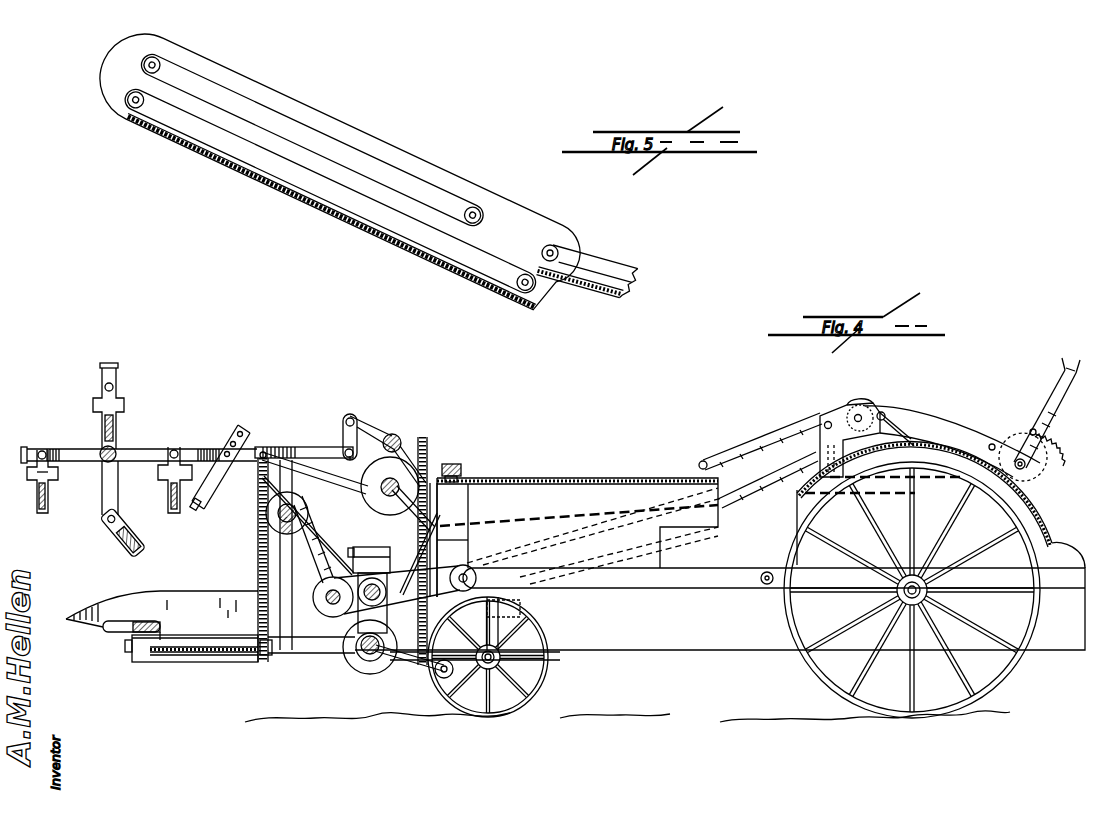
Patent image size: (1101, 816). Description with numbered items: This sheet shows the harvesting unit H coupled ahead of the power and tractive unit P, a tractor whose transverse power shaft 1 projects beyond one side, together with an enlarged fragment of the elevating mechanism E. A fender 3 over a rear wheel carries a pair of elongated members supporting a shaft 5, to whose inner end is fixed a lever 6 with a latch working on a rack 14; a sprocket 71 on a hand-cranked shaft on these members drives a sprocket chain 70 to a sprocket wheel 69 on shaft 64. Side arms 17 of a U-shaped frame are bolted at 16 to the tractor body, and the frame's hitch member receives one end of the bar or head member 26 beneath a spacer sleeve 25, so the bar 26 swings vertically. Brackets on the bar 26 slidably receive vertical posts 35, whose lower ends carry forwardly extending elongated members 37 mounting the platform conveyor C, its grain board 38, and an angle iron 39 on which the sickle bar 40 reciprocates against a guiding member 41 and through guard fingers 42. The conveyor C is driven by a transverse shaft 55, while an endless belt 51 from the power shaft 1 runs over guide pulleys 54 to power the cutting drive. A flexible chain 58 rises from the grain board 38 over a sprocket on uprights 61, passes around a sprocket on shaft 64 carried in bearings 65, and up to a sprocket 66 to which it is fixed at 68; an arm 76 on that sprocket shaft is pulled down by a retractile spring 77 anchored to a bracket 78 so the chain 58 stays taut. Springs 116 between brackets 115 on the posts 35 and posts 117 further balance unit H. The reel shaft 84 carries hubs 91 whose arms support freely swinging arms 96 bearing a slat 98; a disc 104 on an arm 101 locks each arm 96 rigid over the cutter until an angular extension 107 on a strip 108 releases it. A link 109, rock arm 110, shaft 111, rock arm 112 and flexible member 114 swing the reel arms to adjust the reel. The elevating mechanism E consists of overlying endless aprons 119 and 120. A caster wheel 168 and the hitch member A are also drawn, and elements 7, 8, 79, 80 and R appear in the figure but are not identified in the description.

In FIG. 4, the power shaft 1 is at (767, 586).
In FIG. 4, the fender 3 is at (1047, 532).
In FIG. 4, the shaft 5 is at (1047, 480).
In FIG. 4, the lever 6 is at (1058, 424).
In FIG. 4, the lever handle fork 7 is at (1066, 392).
In FIG. 4, the sector gear 8 is at (1050, 463).
In FIG. 4, the rack 14 is at (322, 560).
In FIG. 4, the bolt 16 is at (540, 622).
In FIG. 4, the side arms 17 is at (480, 620).
In FIG. 4, the spacer sleeve 25 is at (351, 572).
In FIG. 4, the bar or head member 26 is at (328, 614).
In FIG. 4, the post 35 is at (438, 540).
In FIG. 4, the elongated member 37 is at (222, 662).
In FIG. 4, the grain board 38 is at (256, 570).
In FIG. 4, the angle iron 39 is at (112, 658).
In FIG. 4, the sickle bar 40 is at (162, 604).
In FIG. 4, the guiding member 41 is at (160, 620).
In FIG. 4, the guard fingers 42 is at (103, 625).
In FIG. 4, the endless belt 51 is at (675, 590).
In FIG. 4, the guide pulley 54 is at (480, 582).
In FIG. 5, the shaft 55 is at (560, 254).
In FIG. 4, the flexible member or chain 58 is at (305, 522).
In FIG. 4, the uprights 61 is at (278, 530).
In FIG. 4, the shaft 64 is at (362, 672).
In FIG. 4, the bearing 65 is at (396, 477).
In FIG. 4, the sprocket 66 is at (373, 475).
In FIG. 4, the chain fastening 68 is at (360, 512).
In FIG. 4, the sprocket wheel 69 is at (373, 675).
In FIG. 4, the sprocket chain 70 is at (752, 452).
In FIG. 4, the sprocket 71 is at (858, 402).
In FIG. 4, the arm 76 is at (310, 468).
In FIG. 4, the retractile spring 77 is at (256, 488).
In FIG. 4, the outstanding bracket 78 is at (268, 658).
In FIG. 4, the rack bar 79 is at (430, 462).
In FIG. 4, the hidden rod 80 is at (437, 530).
In FIG. 4, the reel shaft 84 is at (116, 454).
In FIG. 4, the hubs 91 is at (71, 449).
In FIG. 4, the freely swinging arm 96 is at (100, 394).
In FIG. 4, the slat 98 is at (36, 500).
In FIG. 4, the arm 101 is at (114, 382).
In FIG. 4, the circular head or disc 104 is at (108, 363).
In FIG. 4, the angular extension 107 is at (203, 511).
In FIG. 4, the strip 108 is at (236, 440).
In FIG. 4, the link 109 is at (343, 448).
In FIG. 4, the rock arm 110 is at (352, 410).
In FIG. 4, the shaft 111 is at (395, 438).
In FIG. 4, the rock arm 112 is at (437, 446).
In FIG. 4, the flexible member 114 is at (776, 486).
In FIG. 4, the bracket 115 is at (442, 680).
In FIG. 4, the retractile spring 116 is at (437, 560).
In FIG. 4, the post 117 is at (426, 436).
In FIG. 5, the endless apron 119 is at (275, 188).
In FIG. 5, the endless apron 120 is at (342, 140).
In FIG. 4, the caster wheel 168 is at (455, 722).
In FIG. 4, the hitch member A is at (924, 420).
In FIG. 5, the platform conveyor C is at (632, 270).
In FIG. 4, the platform conveyor C is at (186, 640).
In FIG. 5, the elevating mechanism E is at (352, 232).
In FIG. 4, the harvesting unit H is at (257, 444).
In FIG. 4, the power and tractive unit P is at (633, 480).
In FIG. 4, the rear wheel R is at (1012, 672).